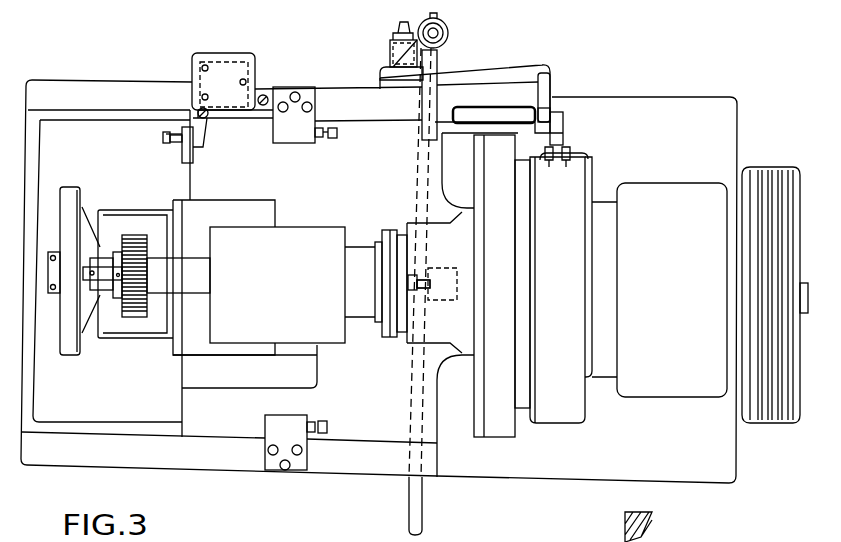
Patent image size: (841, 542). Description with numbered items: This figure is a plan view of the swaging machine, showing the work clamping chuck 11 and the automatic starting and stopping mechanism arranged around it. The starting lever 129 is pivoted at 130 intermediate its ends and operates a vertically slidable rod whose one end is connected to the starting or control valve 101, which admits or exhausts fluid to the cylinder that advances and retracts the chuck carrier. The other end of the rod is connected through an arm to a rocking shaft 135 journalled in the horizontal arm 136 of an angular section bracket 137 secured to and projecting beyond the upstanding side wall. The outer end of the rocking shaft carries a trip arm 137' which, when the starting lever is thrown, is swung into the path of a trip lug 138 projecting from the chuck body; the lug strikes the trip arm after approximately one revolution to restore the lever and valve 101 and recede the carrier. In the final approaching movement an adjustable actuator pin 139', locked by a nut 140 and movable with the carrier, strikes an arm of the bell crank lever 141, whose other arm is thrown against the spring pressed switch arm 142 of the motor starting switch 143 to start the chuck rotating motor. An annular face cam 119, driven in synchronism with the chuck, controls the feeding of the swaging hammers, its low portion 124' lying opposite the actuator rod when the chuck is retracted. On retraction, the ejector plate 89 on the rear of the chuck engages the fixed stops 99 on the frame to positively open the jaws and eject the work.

The work clamping chuck 11 is at (508, 430).
The ejector plate 89 is at (472, 440).
The fixed stops 99 is at (326, 433).
The control valve 101 is at (388, 53).
The annular face cam 119 is at (80, 355).
The low portion of the cam 124' is at (674, 527).
The starting lever 129 is at (420, 520).
The pivot of the starting lever 130 is at (413, 283).
The rocking shaft 135 is at (513, 103).
The horizontal arm 136 is at (552, 110).
The angular section bracket 137 is at (565, 78).
The trip arm 137' is at (586, 124).
The trip lug 138 is at (562, 147).
The adjustable actuator pin 139' is at (162, 80).
The nut 140 is at (175, 143).
The bell crank lever 141 is at (220, 113).
The spring pressed switch arm 142 is at (265, 97).
The motor starting switch 143 is at (220, 65).